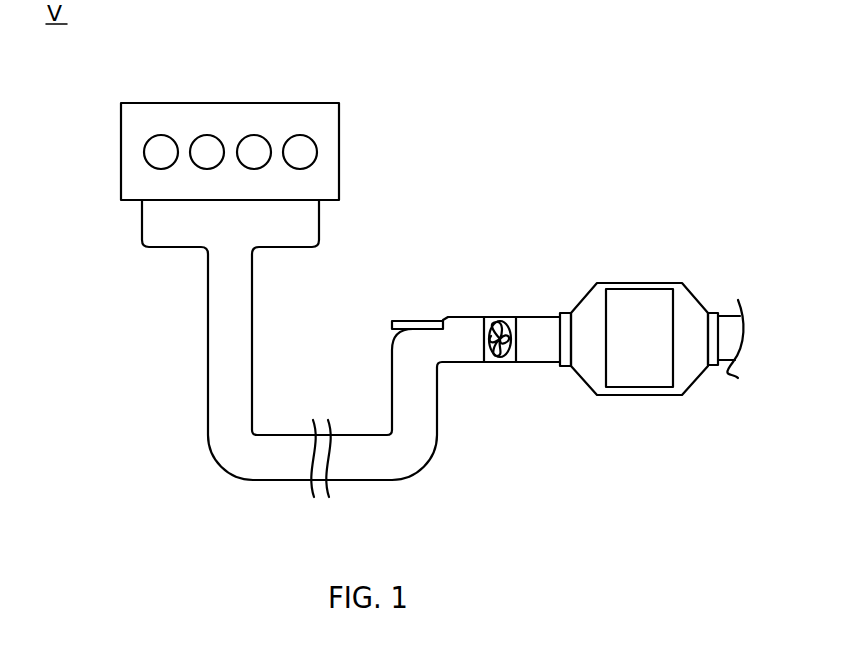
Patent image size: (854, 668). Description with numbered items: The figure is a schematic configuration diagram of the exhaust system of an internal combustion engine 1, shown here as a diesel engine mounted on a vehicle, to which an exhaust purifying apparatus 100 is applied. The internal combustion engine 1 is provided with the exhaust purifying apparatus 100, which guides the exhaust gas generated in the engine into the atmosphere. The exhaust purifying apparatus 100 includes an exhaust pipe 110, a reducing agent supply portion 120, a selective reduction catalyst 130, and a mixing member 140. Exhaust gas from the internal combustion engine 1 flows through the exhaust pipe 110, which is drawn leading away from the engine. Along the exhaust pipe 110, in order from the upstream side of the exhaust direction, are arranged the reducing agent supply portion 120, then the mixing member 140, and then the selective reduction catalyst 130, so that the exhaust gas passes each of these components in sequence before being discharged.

The internal combustion engine 1 is at (121, 151).
The exhaust purifying apparatus 100 is at (435, 103).
The exhaust pipe 110 is at (393, 392).
The reducing agent supply portion 120 is at (413, 320).
The selective reduction catalyst 130 is at (640, 297).
The mixing member 140 is at (507, 315).